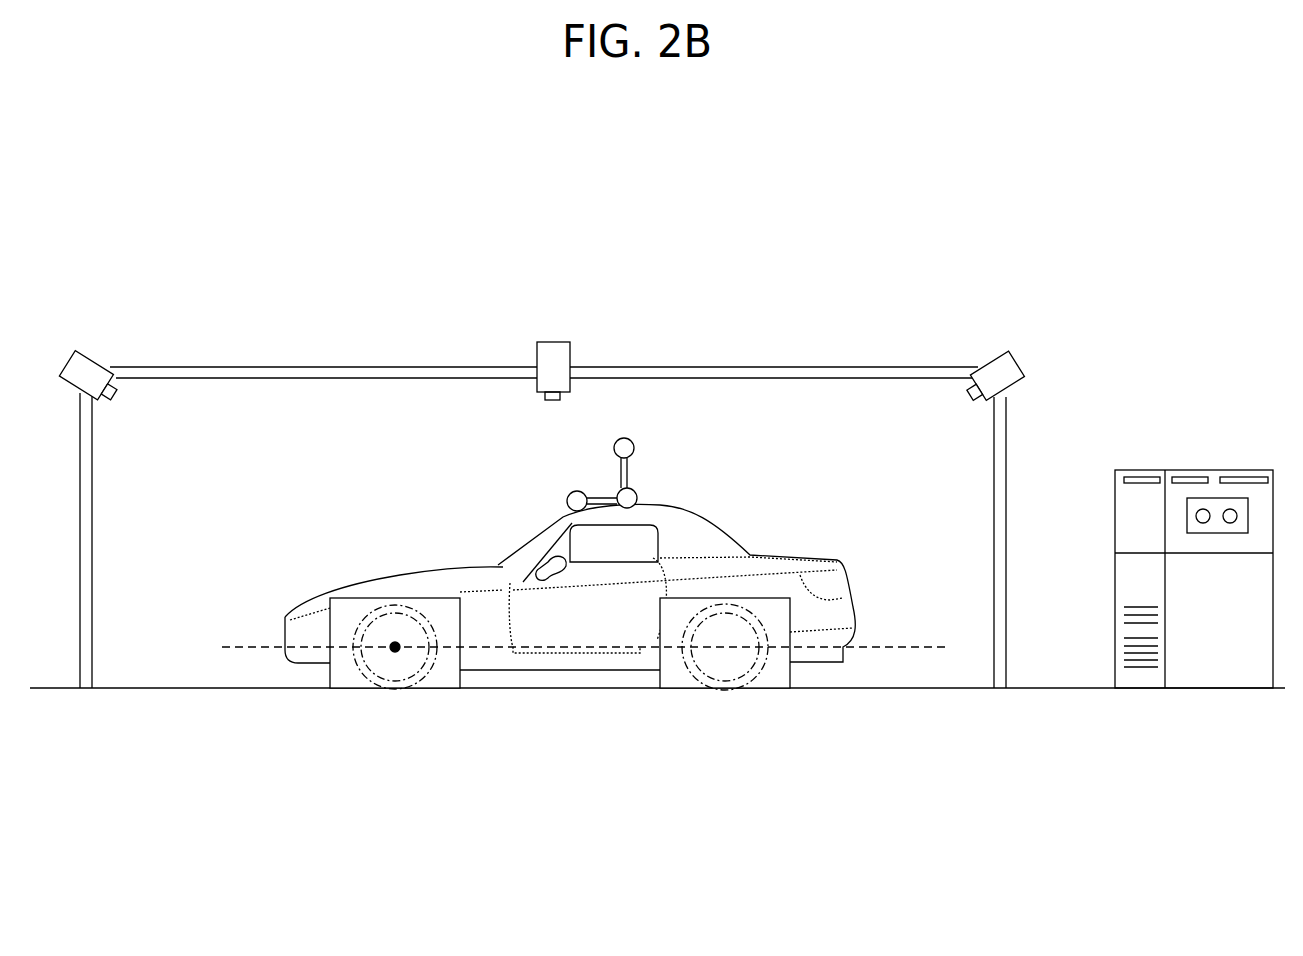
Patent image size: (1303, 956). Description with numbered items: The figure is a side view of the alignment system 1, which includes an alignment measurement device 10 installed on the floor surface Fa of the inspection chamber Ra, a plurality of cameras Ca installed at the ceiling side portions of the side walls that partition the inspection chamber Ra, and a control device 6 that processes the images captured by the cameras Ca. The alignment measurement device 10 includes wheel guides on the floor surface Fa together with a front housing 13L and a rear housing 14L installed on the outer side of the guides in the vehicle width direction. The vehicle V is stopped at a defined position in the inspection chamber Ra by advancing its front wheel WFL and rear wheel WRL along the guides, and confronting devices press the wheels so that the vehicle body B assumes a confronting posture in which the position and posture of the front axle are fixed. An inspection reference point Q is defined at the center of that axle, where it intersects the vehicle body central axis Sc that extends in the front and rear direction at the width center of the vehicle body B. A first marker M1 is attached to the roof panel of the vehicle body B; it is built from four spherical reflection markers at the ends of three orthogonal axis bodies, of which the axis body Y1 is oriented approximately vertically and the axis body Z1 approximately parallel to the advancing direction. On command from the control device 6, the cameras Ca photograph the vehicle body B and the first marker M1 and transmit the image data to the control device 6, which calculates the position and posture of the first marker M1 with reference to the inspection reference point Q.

The alignment system 1 is at (213, 205).
The cameras Ca is at (88, 360).
The inspection chamber Ra is at (252, 434).
The first marker M1 is at (633, 448).
The axis body Z1 is at (603, 497).
The axis body Y1 is at (632, 477).
The vehicle V is at (594, 540).
The control device 6 is at (1228, 470).
The alignment measurement device 10 is at (272, 565).
The front housing 13L is at (360, 603).
The vehicle body B is at (463, 575).
The rear housing 14L is at (775, 605).
The floor surface Fa is at (130, 688).
The vehicle body central axis Sc is at (568, 644).
The front wheel WFL is at (372, 684).
The inspection reference point Q is at (396, 652).
The rear wheel WRL is at (705, 684).